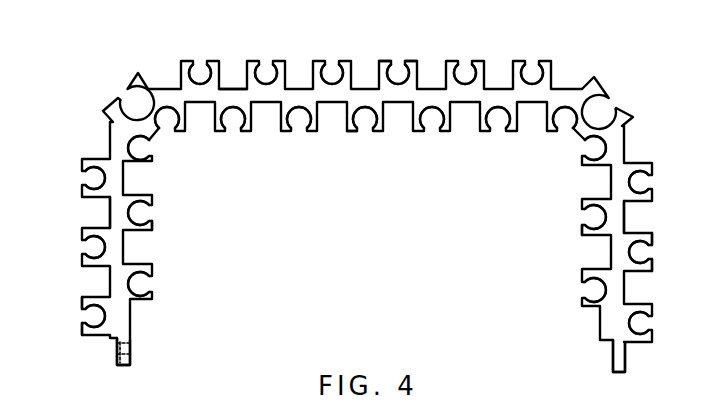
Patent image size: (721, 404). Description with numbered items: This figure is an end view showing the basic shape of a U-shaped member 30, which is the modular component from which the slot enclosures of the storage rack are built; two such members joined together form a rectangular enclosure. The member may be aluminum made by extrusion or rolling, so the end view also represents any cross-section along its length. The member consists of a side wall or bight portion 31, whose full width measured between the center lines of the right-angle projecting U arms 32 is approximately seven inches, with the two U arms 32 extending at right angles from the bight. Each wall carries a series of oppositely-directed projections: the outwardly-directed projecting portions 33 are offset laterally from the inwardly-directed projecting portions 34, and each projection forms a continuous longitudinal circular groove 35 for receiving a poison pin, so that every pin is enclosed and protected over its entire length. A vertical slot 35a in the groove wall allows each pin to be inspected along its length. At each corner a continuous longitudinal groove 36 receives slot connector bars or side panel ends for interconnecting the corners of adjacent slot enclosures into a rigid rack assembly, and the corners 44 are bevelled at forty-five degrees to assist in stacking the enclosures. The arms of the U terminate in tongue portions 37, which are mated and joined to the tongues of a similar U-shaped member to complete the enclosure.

The U-shaped member 30 is at (373, 254).
The side wall or bight portion 31 is at (237, 86).
The U arm 32 is at (118, 207).
The outwardly-directed projecting portion 33 is at (417, 62).
The inwardly-directed projecting portion 34 is at (348, 134).
The continuous longitudinal circular groove 35 is at (333, 65).
The vertical slot 35a is at (432, 134).
The corner groove 36 is at (128, 108).
The tongue portion 37 is at (128, 365).
The bevelled corner 44 is at (135, 78).